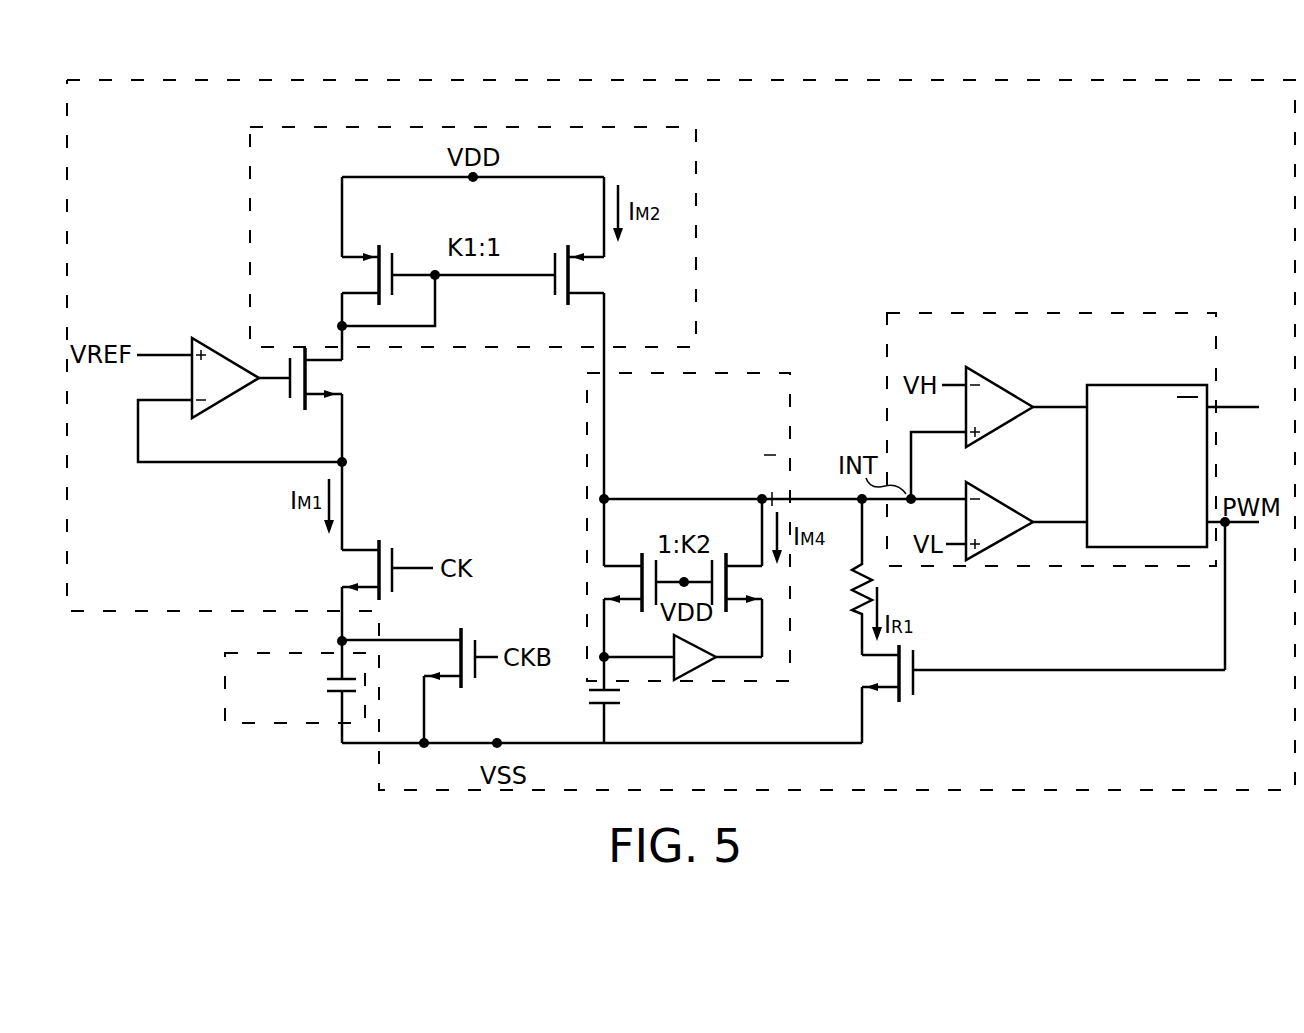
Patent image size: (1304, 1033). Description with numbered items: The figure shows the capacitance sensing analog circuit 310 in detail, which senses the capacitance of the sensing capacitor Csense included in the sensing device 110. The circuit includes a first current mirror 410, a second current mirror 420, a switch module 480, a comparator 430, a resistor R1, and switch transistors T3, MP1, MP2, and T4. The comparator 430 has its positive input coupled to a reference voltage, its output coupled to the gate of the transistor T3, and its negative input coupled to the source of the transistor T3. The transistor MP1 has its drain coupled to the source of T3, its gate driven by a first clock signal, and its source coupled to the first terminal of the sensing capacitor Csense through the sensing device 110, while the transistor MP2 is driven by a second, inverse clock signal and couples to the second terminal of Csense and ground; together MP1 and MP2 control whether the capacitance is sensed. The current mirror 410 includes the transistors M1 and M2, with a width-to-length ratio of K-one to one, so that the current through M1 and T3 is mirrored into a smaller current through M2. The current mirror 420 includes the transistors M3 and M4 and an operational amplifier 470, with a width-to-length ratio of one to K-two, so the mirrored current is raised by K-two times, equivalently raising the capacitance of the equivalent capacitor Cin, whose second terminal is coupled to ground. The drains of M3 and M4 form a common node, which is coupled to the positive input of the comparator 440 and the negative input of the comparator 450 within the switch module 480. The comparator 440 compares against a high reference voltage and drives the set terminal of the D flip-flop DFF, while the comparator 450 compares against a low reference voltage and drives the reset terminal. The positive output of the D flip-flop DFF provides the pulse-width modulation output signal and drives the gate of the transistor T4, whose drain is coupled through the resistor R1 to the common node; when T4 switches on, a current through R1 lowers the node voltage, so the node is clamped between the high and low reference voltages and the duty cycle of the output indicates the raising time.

The capacitance sensing analog circuit 310 is at (1122, 80).
The current mirror 410 is at (650, 127).
The current mirror 420 is at (748, 373).
The comparator 430 is at (226, 400).
The comparator 440 is at (990, 375).
The comparator 450 is at (990, 490).
The operational amplifier 470 is at (698, 640).
The switch module 480 is at (1150, 313).
The sensing device 110 is at (262, 652).
The transistor M1 is at (340, 272).
The transistor M2 is at (618, 266).
The transistor M3 is at (612, 582).
The transistor M4 is at (760, 580).
The transistor MP1 is at (355, 566).
The transistor MP2 is at (418, 650).
The transistor T3 is at (350, 369).
The transistor T4 is at (920, 690).
The resistor R1 is at (884, 578).
The sensing capacitor Csense is at (299, 689).
The equivalent capacitor Cin is at (580, 707).
The D flip-flop DFF is at (1110, 385).